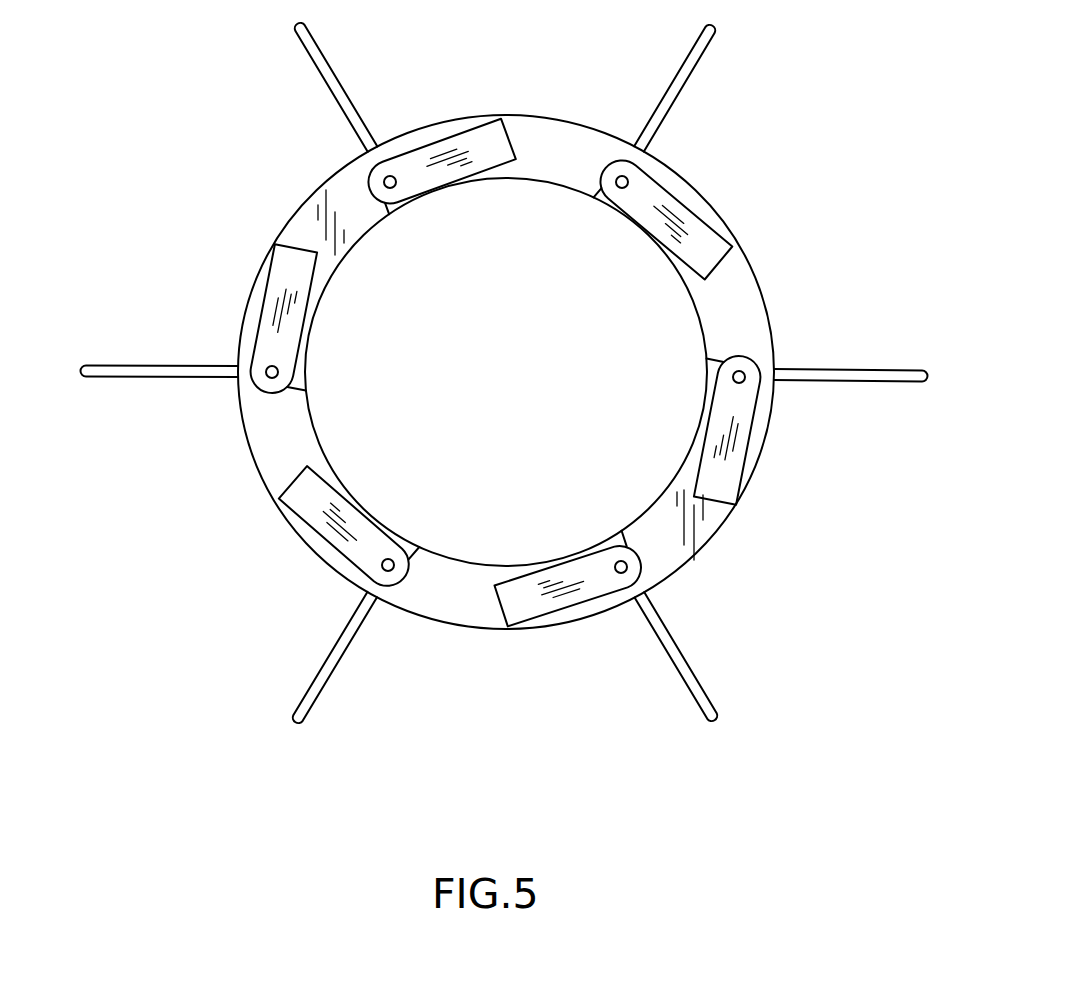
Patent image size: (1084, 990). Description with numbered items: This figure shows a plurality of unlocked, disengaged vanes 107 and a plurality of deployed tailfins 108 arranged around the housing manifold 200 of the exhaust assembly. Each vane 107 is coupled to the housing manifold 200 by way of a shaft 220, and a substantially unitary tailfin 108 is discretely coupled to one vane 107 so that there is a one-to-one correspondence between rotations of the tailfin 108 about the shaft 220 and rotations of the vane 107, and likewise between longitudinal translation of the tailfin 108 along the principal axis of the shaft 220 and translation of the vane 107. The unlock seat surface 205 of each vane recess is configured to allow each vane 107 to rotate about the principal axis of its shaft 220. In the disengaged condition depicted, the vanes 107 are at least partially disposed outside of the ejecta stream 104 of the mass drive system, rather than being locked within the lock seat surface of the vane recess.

The ejecta stream 104 is at (370, 245).
The vane 107 is at (705, 232).
The tailfin 108 is at (715, 42).
The housing manifold 200 is at (761, 411).
The unlock seat surface 205 is at (648, 535).
The shaft 220 is at (744, 374).